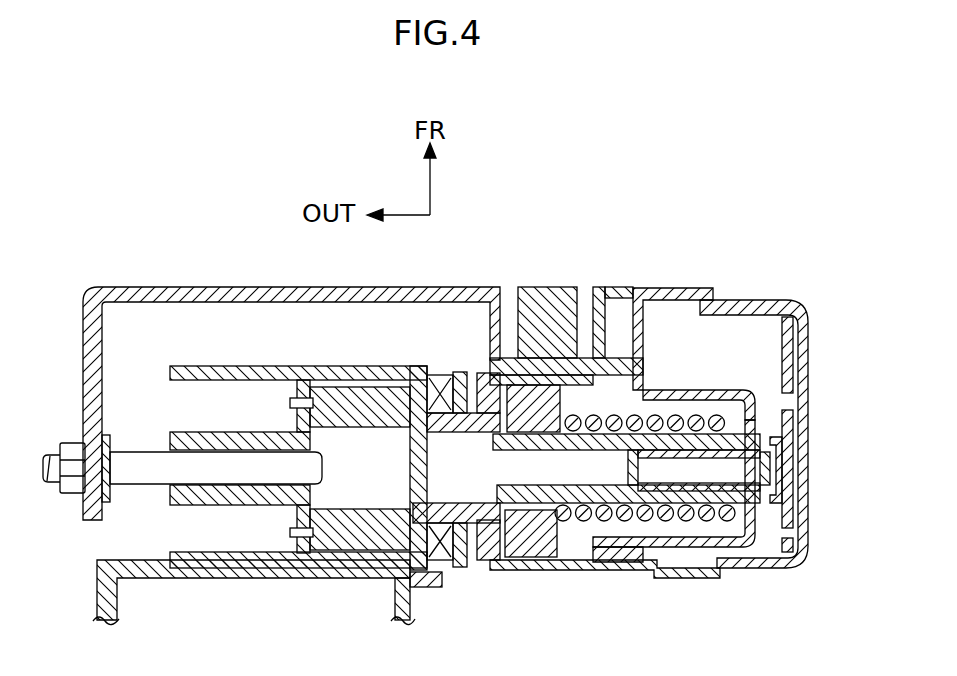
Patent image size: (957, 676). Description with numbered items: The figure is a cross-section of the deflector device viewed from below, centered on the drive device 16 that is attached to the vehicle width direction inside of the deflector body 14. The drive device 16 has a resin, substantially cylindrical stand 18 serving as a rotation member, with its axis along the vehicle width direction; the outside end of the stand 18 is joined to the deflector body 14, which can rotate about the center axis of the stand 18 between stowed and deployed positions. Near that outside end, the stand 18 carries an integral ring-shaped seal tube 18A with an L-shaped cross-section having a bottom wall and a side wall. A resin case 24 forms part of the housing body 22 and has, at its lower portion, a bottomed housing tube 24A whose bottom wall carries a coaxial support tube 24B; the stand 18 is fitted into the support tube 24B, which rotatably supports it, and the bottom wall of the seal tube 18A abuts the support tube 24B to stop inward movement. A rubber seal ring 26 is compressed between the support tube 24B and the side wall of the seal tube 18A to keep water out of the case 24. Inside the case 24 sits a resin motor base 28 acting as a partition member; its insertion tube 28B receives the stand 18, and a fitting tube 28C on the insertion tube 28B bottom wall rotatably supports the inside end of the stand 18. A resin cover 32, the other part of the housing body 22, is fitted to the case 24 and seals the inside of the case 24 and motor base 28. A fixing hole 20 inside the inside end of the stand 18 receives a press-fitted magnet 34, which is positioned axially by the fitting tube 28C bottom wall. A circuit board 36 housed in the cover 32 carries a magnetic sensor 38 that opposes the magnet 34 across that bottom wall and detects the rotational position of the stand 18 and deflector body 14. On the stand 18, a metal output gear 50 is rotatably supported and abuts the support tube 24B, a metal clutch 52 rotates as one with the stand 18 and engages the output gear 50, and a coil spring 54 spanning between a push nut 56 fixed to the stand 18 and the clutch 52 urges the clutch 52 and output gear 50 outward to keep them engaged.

The deflector body 14 is at (97, 597).
The drive device 16 is at (208, 265).
The stand 18 is at (462, 523).
The seal tube 18A is at (437, 368).
The fixing hole 20 is at (858, 444).
The housing body 22 is at (693, 431).
The case 24 is at (566, 268).
The housing tube 24A is at (587, 572).
The support tube 24B is at (463, 412).
The seal ring 26 is at (457, 573).
The motor base 28 is at (655, 300).
The insertion tube 28B is at (727, 392).
The fitting tube 28C is at (775, 508).
The cover 32 is at (770, 284).
The magnet 34 is at (782, 482).
The circuit board 36 is at (797, 363).
The magnetic sensor 38 is at (777, 462).
The output gear 50 is at (510, 570).
The clutch 52 is at (557, 523).
The coil spring 54 is at (663, 517).
The push nut 56 is at (727, 525).